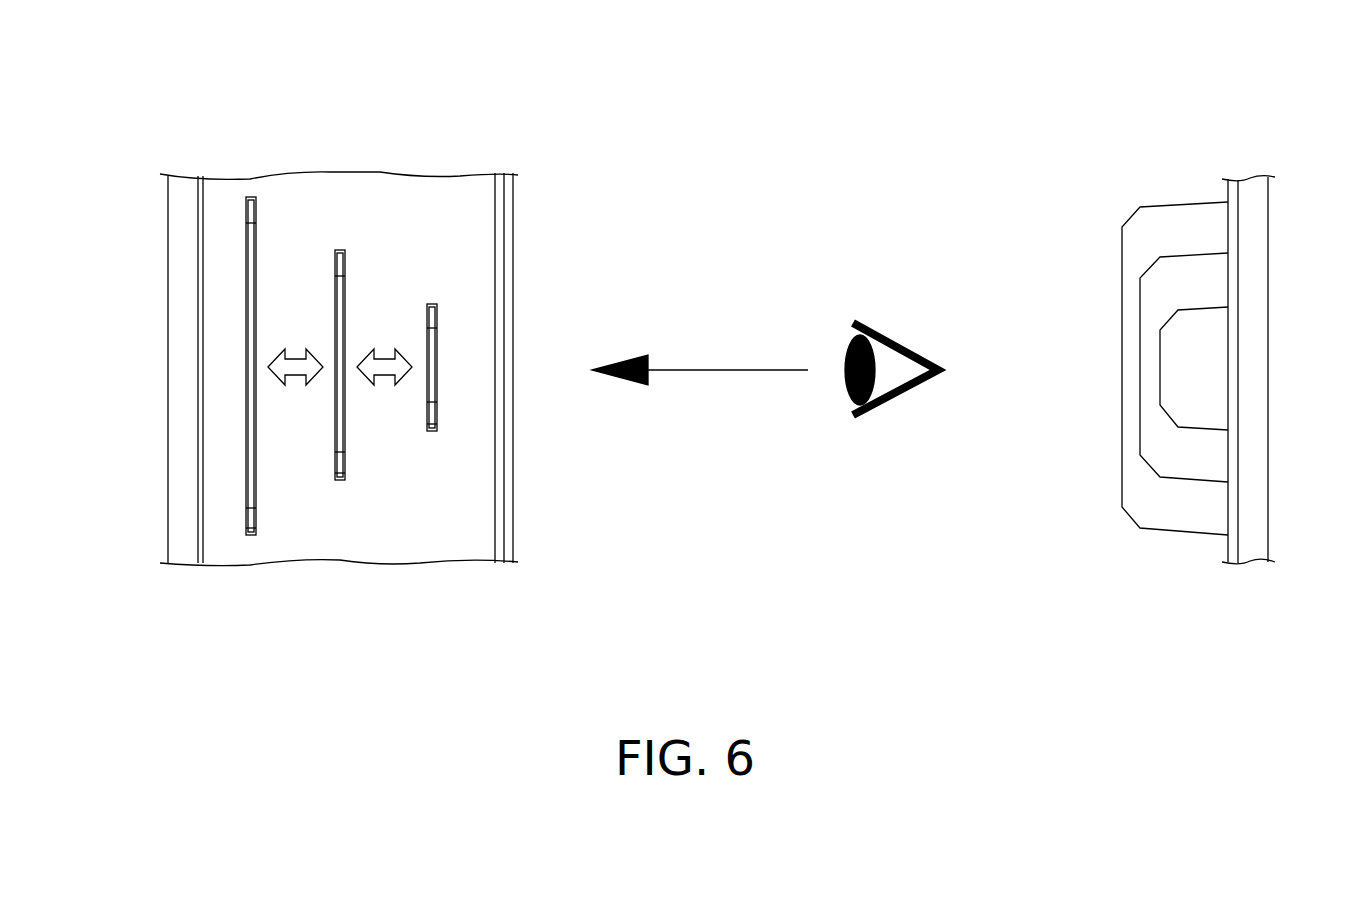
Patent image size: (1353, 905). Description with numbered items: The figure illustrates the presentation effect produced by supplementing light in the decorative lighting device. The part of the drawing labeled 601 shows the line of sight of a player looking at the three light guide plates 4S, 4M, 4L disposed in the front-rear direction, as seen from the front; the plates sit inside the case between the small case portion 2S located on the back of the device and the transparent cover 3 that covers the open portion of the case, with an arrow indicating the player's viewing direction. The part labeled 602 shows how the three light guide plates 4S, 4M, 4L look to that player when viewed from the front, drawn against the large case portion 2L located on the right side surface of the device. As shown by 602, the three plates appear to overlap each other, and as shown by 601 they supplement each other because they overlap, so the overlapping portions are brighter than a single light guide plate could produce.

The line-of-sight diagram part 601 is at (162, 148).
The front appearance diagram part 602 is at (1112, 148).
The small case portion 2S is at (183, 445).
The large case portion 2L is at (1258, 370).
The transparent cover 3 is at (513, 490).
The light guide plate 4L is at (251, 535).
The light guide plate 4M is at (340, 480).
The light guide plate 4S is at (432, 431).